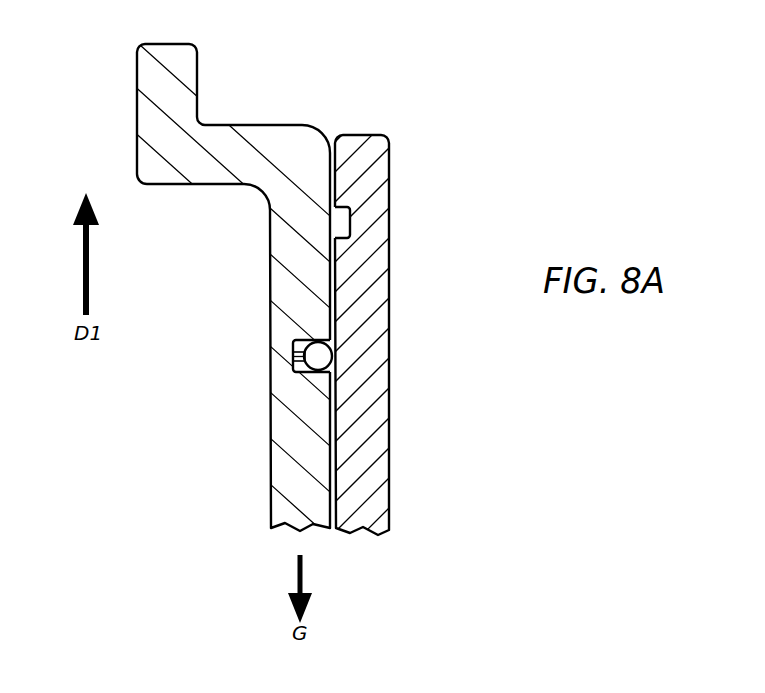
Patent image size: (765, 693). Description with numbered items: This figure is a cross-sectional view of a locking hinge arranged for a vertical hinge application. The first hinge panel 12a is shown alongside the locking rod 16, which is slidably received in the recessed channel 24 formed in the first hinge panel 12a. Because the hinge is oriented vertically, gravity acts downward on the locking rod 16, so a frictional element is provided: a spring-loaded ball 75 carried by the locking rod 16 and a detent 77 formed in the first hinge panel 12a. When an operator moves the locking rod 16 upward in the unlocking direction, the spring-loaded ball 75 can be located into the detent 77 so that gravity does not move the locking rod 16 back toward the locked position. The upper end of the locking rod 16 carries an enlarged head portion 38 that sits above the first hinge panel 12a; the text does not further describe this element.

The locking rod 16 is at (204, 342).
The flange / hook portion 38 is at (143, 63).
The spring-loaded ball 75 is at (307, 375).
The detent 77 is at (348, 215).
The recessed channel 24 is at (339, 288).
The first hinge panel 12a is at (400, 342).